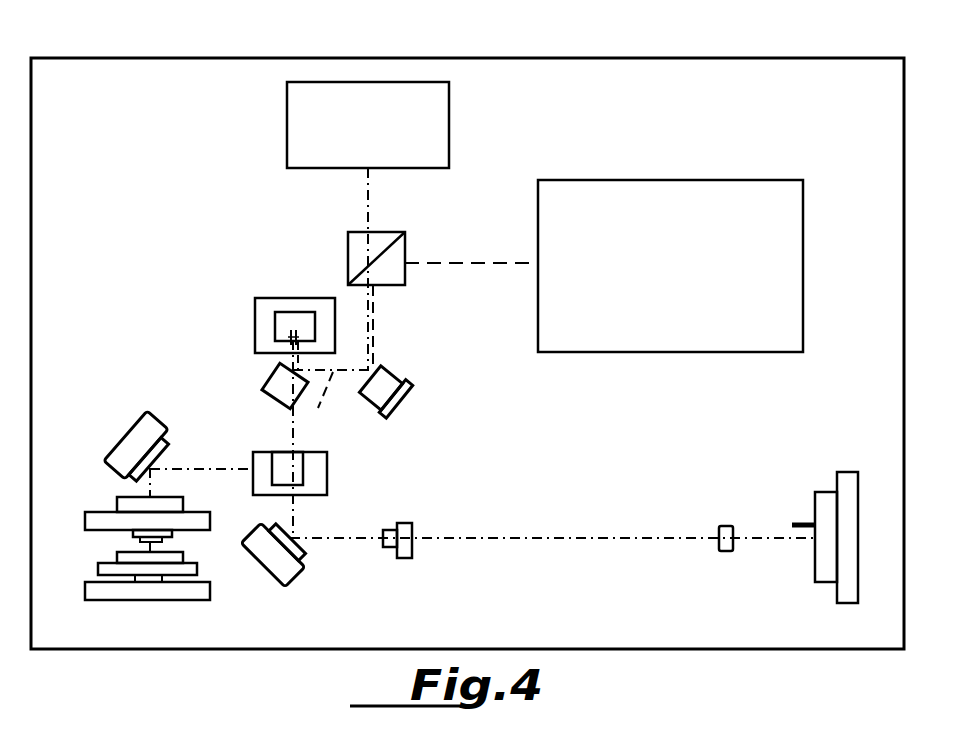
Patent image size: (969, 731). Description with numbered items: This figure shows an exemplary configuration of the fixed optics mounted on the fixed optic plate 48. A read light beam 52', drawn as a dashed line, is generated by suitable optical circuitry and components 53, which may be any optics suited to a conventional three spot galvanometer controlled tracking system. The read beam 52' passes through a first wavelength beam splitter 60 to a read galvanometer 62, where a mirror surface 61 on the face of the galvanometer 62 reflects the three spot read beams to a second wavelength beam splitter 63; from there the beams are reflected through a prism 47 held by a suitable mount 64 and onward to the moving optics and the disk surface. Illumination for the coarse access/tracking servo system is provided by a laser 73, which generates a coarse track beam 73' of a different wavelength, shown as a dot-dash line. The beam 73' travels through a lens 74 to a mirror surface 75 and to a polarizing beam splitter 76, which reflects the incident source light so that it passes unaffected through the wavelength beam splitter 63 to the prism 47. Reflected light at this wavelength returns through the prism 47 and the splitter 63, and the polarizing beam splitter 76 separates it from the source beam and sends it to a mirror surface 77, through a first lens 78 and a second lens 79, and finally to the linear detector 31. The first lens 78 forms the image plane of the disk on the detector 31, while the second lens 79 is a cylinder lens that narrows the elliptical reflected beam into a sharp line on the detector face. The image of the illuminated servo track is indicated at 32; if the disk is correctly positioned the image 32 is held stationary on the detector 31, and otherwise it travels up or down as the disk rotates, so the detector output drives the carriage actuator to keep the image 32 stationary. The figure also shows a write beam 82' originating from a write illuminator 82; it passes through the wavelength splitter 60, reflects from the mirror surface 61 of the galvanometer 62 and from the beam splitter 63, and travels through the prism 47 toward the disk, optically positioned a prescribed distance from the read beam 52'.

The fixed optic plate 48 is at (600, 58).
The write illuminator 82 is at (337, 125).
The write beam 82' is at (367, 269).
The first wavelength beam splitter 60 is at (348, 258).
The read light beam 52' is at (418, 324).
The read illuminator optical circuitry and components 53 is at (665, 183).
The mount 64 is at (255, 313).
The prism 47 is at (285, 315).
The second wavelength beam splitter 63 is at (265, 380).
The mirror surface 61 is at (363, 377).
The read galvanometer 62 is at (415, 390).
The mirror surface 75 is at (138, 430).
The polarizing beam splitter 76 is at (278, 456).
The coarse track beam of light 73' is at (201, 458).
The lens 74 is at (100, 515).
The laser 73 is at (132, 576).
The mirror surface 77 is at (305, 545).
The first lens 78 is at (385, 542).
The second lens 79 is at (719, 528).
The image of the illuminated servo track 32 is at (797, 520).
The linear detector 31 is at (820, 575).